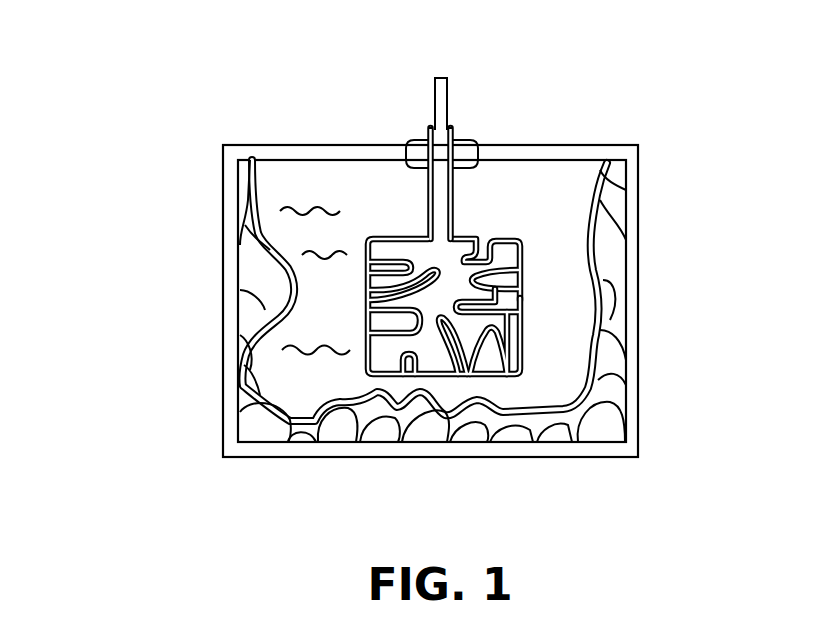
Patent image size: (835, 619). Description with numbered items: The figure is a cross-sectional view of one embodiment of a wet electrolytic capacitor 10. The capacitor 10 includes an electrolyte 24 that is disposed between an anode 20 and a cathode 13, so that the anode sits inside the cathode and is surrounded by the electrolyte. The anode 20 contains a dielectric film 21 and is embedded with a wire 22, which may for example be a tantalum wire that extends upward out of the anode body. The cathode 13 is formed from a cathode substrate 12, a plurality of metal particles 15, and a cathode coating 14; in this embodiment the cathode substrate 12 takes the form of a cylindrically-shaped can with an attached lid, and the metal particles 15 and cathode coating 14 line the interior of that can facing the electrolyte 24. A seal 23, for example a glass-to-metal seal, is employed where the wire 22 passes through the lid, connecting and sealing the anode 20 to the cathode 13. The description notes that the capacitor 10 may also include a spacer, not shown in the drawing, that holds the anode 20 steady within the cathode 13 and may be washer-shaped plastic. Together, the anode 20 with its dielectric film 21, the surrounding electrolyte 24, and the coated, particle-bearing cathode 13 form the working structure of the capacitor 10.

The wet electrolytic capacitor 10 is at (128, 226).
The cathode substrate 12 is at (640, 447).
The cathode 13 is at (660, 256).
The cathode coating 14 is at (260, 207).
The metal particles 15 is at (258, 300).
The anode 20 is at (398, 250).
The dielectric film 21 is at (497, 242).
The wire 22 is at (441, 87).
The seal 23 is at (468, 148).
The electrolyte 24 is at (280, 368).